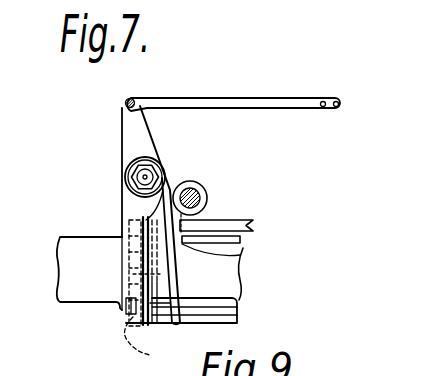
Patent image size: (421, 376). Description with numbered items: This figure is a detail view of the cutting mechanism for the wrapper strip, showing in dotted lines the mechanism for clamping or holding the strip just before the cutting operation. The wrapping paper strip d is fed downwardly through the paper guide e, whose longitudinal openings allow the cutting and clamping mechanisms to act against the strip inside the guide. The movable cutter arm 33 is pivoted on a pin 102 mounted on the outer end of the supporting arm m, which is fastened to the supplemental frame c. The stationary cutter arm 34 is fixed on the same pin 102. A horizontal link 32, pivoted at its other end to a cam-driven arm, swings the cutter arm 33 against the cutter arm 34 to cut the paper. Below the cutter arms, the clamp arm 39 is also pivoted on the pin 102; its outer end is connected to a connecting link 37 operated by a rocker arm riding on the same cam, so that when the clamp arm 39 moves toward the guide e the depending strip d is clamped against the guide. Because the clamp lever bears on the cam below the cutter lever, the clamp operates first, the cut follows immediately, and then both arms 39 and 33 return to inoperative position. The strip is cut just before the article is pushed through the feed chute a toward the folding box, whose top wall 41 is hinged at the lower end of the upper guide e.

The horizontal link 32 is at (236, 99).
The connecting link 37 is at (331, 99).
The movable cutter arm 33 is at (156, 128).
The pin 102 is at (142, 178).
The supplemental frame c is at (196, 193).
The supporting arm m is at (169, 186).
The top wall 41 is at (89, 273).
The stationary cutter arm 34 is at (135, 214).
The clamp arm 39 is at (232, 261).
The feed chute a is at (216, 296).
The paper strip d is at (168, 270).
The paper guide e is at (152, 320).